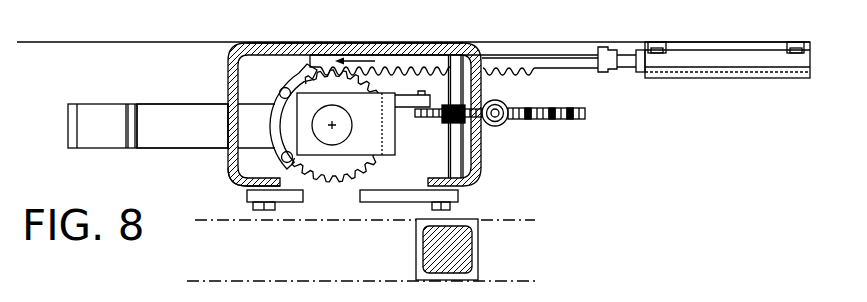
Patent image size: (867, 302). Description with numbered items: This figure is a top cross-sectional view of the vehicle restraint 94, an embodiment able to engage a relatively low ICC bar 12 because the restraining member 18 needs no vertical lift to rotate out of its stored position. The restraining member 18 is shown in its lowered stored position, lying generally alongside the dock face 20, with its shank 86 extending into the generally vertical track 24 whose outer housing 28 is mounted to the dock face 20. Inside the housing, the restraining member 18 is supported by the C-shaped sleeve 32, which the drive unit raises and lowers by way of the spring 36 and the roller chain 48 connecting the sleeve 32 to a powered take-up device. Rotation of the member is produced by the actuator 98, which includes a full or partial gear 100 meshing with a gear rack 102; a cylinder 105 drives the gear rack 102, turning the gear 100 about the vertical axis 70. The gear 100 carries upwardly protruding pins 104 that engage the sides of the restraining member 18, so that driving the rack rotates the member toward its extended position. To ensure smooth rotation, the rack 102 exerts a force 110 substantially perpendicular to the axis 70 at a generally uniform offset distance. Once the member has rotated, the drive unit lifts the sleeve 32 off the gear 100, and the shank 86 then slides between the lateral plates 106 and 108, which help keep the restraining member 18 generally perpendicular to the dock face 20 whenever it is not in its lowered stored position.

The ICC bar 12 is at (497, 218).
The restraining member 18 is at (97, 105).
The dock face 20 is at (128, 45).
The track 24 is at (233, 65).
The outer housing 28 is at (240, 188).
The sleeve 32 is at (396, 128).
The spring 36 is at (492, 127).
The roller chain 48 is at (552, 119).
The vertical axis 70 is at (338, 128).
The shank 86 is at (168, 150).
The vehicle restraint 94 is at (582, 181).
The actuator 98 is at (258, 74).
The gear 100 is at (336, 183).
The gear rack 102 is at (513, 76).
The pins 104 is at (280, 99).
The cylinder 105 is at (690, 80).
The lateral plate 106 is at (290, 205).
The lateral plate 108 is at (383, 205).
The force 110 is at (357, 50).